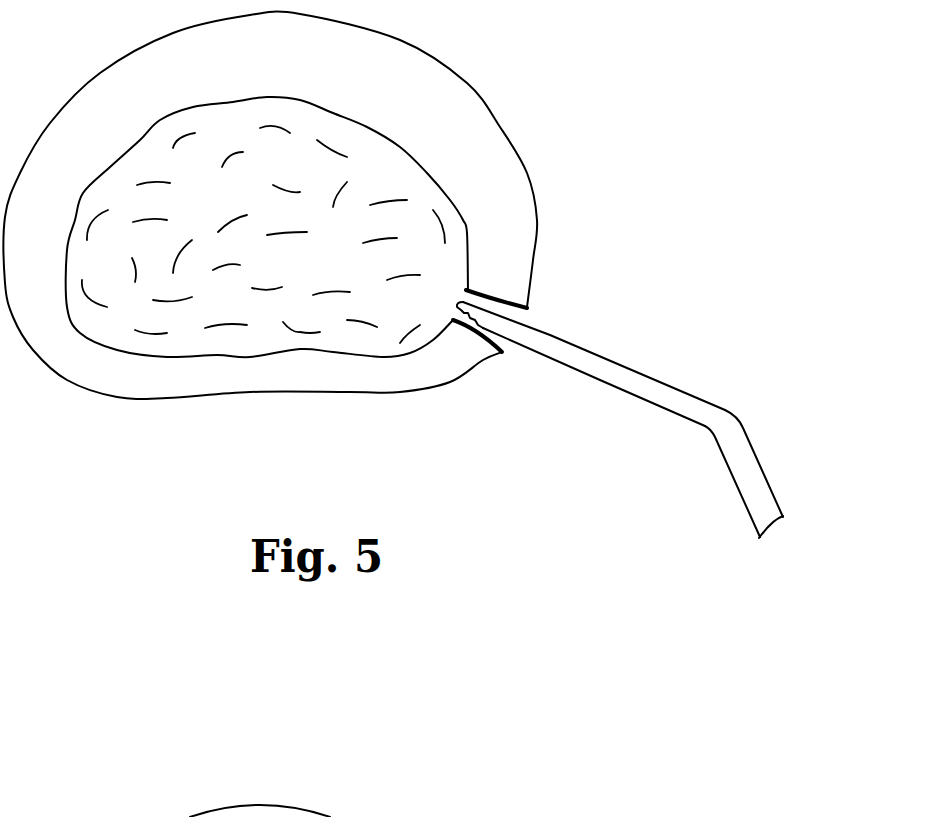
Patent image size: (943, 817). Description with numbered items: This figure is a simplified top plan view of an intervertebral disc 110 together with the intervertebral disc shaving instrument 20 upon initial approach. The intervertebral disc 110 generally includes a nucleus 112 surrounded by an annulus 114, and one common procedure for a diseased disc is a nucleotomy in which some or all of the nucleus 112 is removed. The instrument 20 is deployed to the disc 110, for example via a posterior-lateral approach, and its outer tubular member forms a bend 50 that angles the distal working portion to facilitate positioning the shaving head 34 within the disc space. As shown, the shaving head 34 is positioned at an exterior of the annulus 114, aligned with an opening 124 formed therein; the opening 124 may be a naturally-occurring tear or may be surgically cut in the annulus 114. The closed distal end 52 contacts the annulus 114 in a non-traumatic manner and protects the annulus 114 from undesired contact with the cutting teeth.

The intervertebral disc 110 is at (298, 236).
The nucleus 112 is at (367, 162).
The annulus 114 is at (225, 395).
The opening 124 is at (503, 301).
The intervertebral disc shaving instrument 20 is at (599, 419).
The shaving head 34 is at (580, 330).
The bend 50 is at (737, 423).
The closed distal end 52 is at (456, 302).